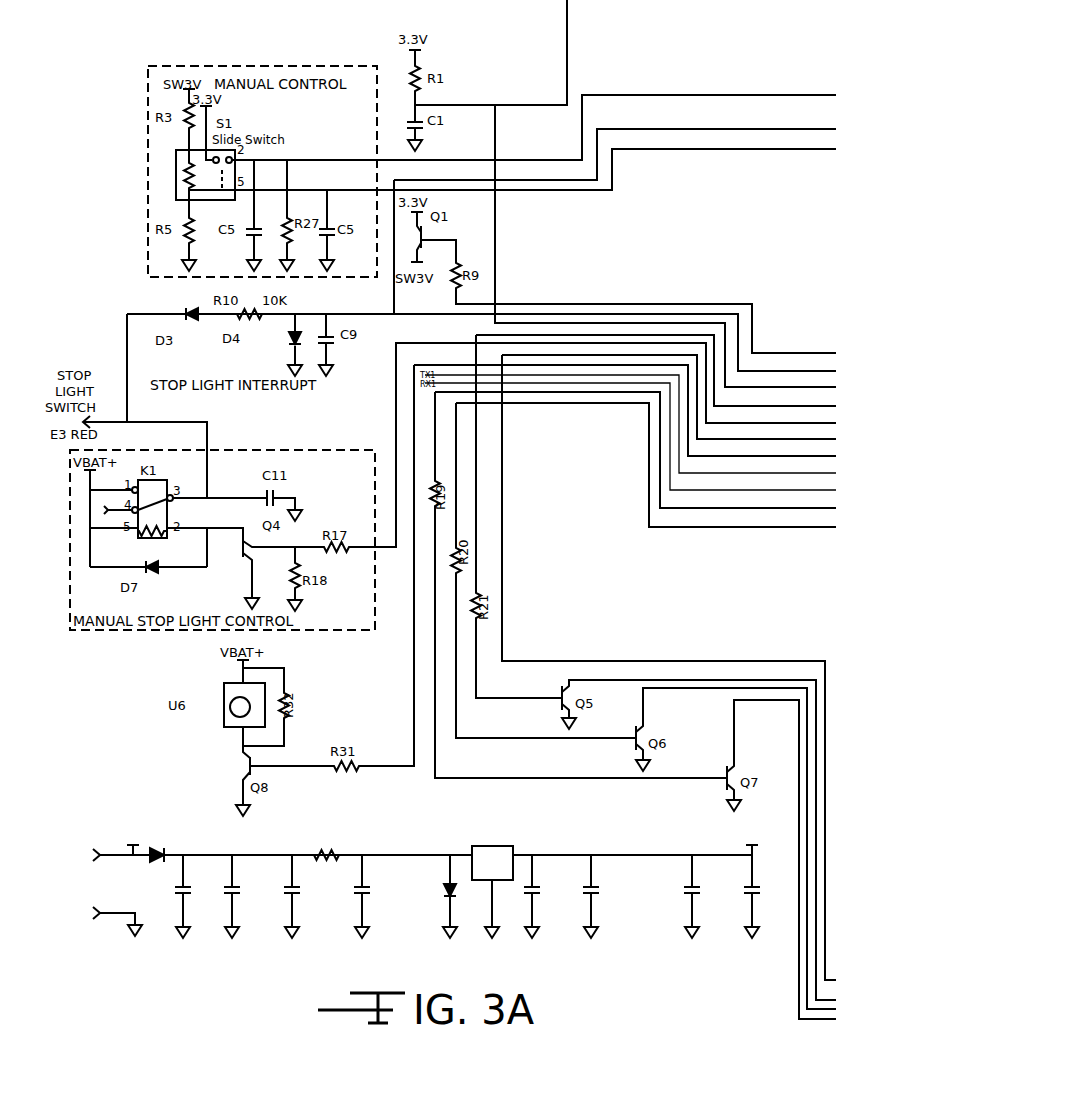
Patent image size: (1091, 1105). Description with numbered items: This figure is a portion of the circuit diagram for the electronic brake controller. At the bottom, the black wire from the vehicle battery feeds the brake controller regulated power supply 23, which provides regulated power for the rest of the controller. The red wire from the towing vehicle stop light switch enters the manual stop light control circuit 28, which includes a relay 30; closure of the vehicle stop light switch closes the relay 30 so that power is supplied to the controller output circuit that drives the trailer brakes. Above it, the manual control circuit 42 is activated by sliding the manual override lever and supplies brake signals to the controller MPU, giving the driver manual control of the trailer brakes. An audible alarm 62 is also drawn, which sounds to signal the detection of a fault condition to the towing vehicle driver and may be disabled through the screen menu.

The manual control circuit 42 is at (341, 147).
The manual stop light control circuit 28 is at (298, 447).
The relay 30 is at (154, 448).
The audible alarm 62 is at (298, 700).
The brake controller regulated power supply 23 is at (744, 829).